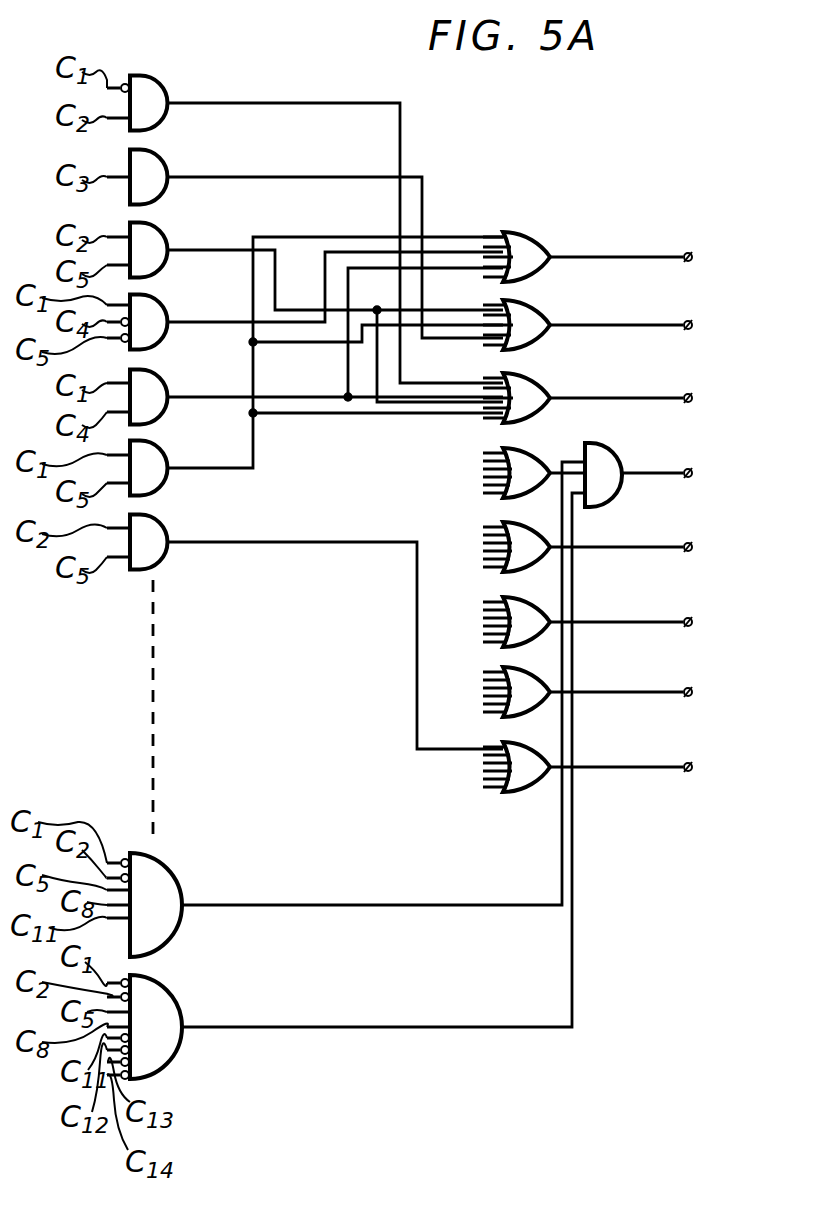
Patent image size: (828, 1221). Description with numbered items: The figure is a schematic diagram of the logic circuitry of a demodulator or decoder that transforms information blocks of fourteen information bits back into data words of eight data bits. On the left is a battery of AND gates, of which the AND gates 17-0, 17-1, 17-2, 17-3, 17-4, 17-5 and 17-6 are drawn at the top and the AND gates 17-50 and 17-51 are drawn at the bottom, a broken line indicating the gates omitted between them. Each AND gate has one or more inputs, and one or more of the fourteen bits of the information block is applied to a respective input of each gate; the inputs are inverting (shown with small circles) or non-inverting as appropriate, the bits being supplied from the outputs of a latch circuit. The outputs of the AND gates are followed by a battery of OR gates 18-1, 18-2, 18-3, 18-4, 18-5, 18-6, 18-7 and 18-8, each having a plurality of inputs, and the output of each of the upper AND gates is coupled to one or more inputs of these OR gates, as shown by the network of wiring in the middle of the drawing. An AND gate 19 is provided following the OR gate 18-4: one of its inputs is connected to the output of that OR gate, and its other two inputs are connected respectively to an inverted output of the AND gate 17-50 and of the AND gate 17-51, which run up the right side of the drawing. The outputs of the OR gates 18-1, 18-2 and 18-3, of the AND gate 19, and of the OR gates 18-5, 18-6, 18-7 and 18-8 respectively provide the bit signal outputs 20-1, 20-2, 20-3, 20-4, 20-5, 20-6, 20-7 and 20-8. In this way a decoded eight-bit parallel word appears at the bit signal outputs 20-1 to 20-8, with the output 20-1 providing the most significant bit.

The AND gate 17-0 is at (158, 128).
The AND gate 17-1 is at (158, 202).
The AND gate 17-2 is at (158, 275).
The AND gate 17-3 is at (158, 347).
The AND gate 17-4 is at (158, 422).
The AND gate 17-5 is at (158, 493).
The AND gate 17-6 is at (158, 567).
The AND gate 17-50 is at (170, 940).
The AND gate 17-51 is at (170, 1062).
The OR gate 18-1 is at (500, 285).
The OR gate 18-2 is at (500, 355).
The OR gate 18-3 is at (500, 428).
The OR gate 18-4 is at (497, 501).
The OR gate 18-5 is at (500, 572).
The OR gate 18-6 is at (500, 643).
The OR gate 18-7 is at (500, 715).
The OR gate 18-8 is at (500, 790).
The AND gate 19 is at (618, 497).
The bit signal output 20-1 is at (692, 257).
The bit signal output 20-2 is at (692, 325).
The bit signal output 20-3 is at (692, 398).
The bit signal output 20-4 is at (692, 473).
The bit signal output 20-5 is at (692, 547).
The bit signal output 20-6 is at (692, 622).
The bit signal output 20-7 is at (692, 692).
The bit signal output 20-8 is at (692, 767).